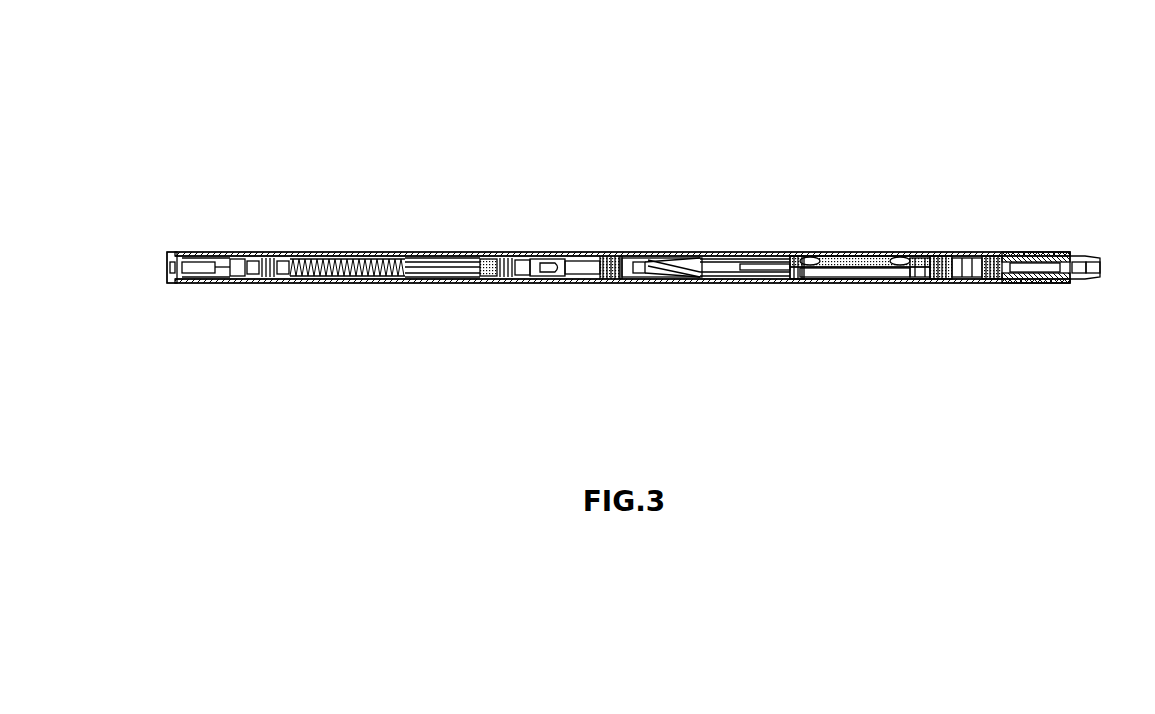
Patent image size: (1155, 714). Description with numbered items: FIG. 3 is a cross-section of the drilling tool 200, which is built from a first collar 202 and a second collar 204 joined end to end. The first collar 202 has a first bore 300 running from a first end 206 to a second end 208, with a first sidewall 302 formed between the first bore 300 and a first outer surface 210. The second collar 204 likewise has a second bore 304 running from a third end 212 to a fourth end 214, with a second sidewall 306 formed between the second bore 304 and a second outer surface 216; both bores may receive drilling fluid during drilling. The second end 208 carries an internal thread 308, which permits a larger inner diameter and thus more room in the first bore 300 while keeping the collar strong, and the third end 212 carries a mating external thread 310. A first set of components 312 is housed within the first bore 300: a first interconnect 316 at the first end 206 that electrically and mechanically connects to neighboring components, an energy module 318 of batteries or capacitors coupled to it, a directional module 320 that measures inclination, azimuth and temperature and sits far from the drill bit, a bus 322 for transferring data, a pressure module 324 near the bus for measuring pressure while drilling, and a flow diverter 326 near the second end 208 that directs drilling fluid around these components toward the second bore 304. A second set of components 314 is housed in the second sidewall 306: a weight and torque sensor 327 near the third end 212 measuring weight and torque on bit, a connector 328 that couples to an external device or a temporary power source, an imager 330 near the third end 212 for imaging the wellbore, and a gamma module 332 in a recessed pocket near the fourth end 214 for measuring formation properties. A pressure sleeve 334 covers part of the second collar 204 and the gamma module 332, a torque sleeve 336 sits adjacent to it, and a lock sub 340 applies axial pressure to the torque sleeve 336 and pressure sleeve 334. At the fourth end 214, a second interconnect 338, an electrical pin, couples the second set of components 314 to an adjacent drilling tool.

The drilling tool 200 is at (312, 92).
The first collar 202 is at (320, 252).
The second collar 204 is at (770, 250).
The first end 206 is at (175, 250).
The second end 208 is at (592, 245).
The first outer surface 210 is at (382, 252).
The third end 212 is at (641, 212).
The fourth end 214 is at (1073, 233).
The second outer surface 216 is at (825, 250).
The first bore 300 is at (465, 252).
The first sidewall 302 is at (420, 252).
The second bore 304 is at (766, 268).
The second sidewall 306 is at (762, 284).
The internal thread 308 is at (603, 284).
The external thread 310 is at (612, 284).
The first set of components 312 is at (388, 145).
The second set of components 314 is at (797, 145).
The first interconnect 316 is at (195, 283).
The energy module 318 is at (243, 252).
The directional module 320 is at (352, 284).
The bus 322 is at (440, 284).
The pressure module 324 is at (485, 252).
The flow diverter 326 is at (540, 252).
The weight and torque sensor 327 is at (645, 280).
The connector 328 is at (662, 250).
The imager 330 is at (715, 250).
The gamma module 332 is at (870, 250).
The pressure sleeve 334 is at (850, 285).
The torque sleeve 336 is at (930, 285).
The second interconnect 338 is at (1010, 285).
The lock sub 340 is at (1028, 250).